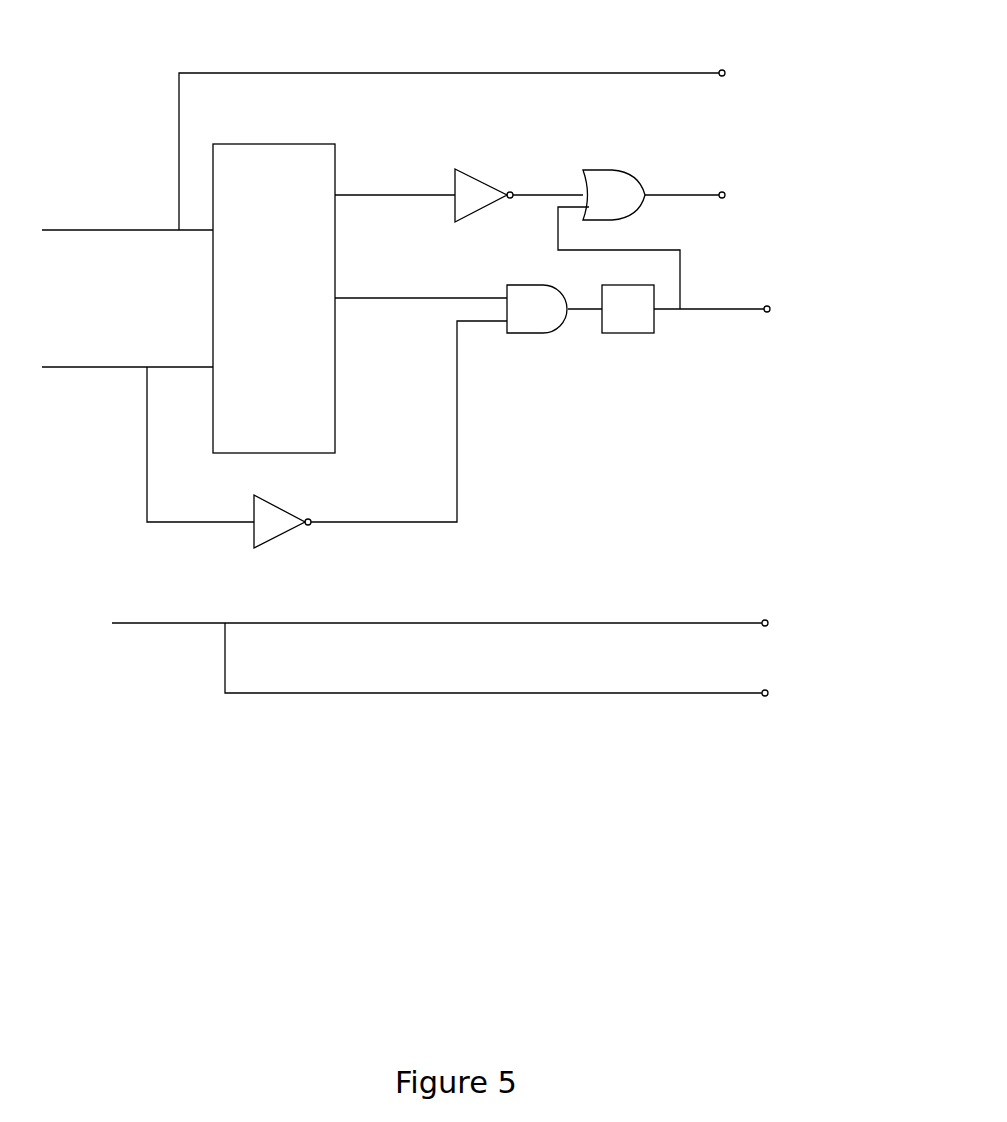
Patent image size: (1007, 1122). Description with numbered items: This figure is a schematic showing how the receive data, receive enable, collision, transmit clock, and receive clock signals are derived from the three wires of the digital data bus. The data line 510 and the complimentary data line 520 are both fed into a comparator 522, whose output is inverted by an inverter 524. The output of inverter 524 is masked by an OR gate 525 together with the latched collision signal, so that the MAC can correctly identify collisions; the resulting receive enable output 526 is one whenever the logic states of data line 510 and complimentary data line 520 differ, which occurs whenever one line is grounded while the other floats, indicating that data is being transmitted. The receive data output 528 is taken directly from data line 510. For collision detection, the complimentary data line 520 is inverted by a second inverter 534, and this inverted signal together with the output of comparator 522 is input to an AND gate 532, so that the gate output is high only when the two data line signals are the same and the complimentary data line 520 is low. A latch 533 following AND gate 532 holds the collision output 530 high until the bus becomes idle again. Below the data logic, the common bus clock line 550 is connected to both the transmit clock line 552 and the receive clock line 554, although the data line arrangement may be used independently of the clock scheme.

The data line 510 is at (55, 225).
The complimentary data line 520 is at (55, 363).
The comparator 522 is at (275, 140).
The inverter 524 is at (485, 180).
The OR gate 525 is at (598, 167).
The receive enable output 526 is at (723, 191).
The receive data output 528 is at (723, 69).
The collision output 530 is at (768, 305).
The AND gate 532 is at (523, 335).
The latch 533 is at (628, 335).
The inverter 534 is at (283, 532).
The common bus clock line 550 is at (143, 627).
The transmit clock line 552 is at (766, 619).
The receive clock line 554 is at (765, 700).